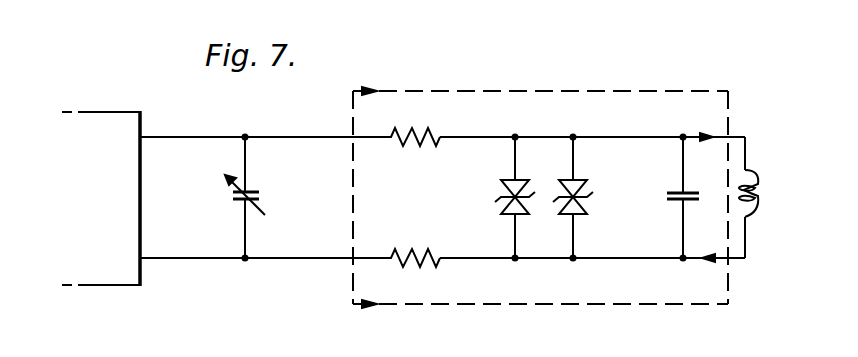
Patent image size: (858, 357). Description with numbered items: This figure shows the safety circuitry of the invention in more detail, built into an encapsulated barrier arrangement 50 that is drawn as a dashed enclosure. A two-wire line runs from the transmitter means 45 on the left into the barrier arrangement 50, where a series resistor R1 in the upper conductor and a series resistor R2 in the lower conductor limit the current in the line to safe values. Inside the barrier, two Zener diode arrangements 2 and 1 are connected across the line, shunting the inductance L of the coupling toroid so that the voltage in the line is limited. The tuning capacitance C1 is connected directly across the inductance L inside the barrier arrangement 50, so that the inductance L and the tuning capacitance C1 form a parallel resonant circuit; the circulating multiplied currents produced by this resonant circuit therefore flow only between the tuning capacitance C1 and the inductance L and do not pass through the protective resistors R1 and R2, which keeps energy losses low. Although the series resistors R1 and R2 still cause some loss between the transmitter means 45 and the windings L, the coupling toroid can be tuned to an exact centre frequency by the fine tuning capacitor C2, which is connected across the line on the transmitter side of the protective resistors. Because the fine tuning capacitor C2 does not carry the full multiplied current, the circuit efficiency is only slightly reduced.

The transmitter means 45 is at (108, 200).
The fine tuning capacitor C2 is at (238, 204).
The series resistor R1 is at (413, 130).
The series resistor R2 is at (404, 268).
The Zener diode arrangement 2 is at (500, 194).
The Zener diode arrangement 1 is at (590, 193).
The tuning capacitance C1 is at (678, 188).
The inductance of the coupling toroid L is at (757, 216).
The barrier arrangement 50 is at (700, 283).